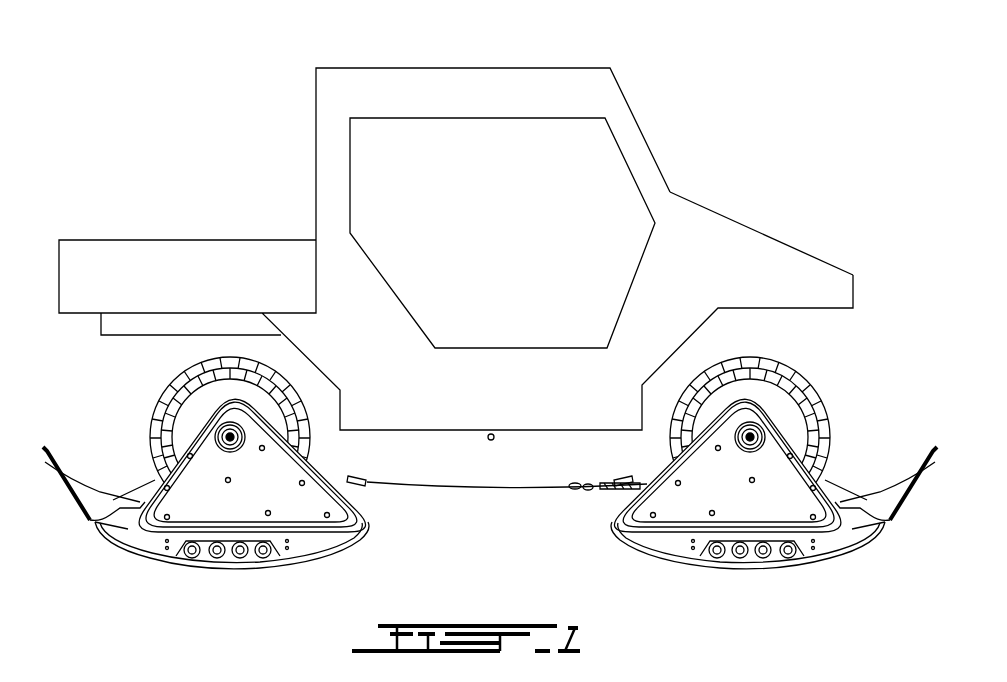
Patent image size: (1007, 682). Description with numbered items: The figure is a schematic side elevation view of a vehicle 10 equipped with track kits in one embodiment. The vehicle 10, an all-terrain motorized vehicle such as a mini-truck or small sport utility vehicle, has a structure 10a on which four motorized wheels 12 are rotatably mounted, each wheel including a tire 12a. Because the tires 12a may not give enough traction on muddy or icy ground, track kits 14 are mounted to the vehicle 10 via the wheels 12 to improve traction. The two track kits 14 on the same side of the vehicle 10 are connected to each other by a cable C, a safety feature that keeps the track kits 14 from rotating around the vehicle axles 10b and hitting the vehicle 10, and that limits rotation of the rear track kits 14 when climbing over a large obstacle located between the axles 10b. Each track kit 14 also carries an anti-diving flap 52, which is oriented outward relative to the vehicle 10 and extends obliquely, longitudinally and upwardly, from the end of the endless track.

The vehicle 10 is at (766, 138).
The structure 10a is at (778, 238).
The vehicle axles 10b is at (232, 453).
The wheels 12 is at (843, 358).
The tires 12a is at (830, 410).
The track kits 14 is at (885, 478).
The anti-diving flap 52 is at (48, 455).
The cable C is at (463, 492).